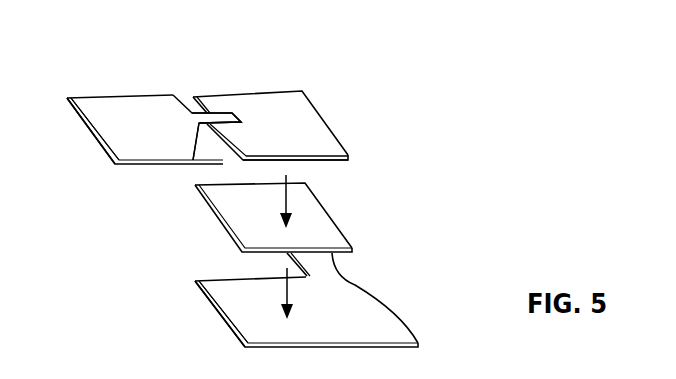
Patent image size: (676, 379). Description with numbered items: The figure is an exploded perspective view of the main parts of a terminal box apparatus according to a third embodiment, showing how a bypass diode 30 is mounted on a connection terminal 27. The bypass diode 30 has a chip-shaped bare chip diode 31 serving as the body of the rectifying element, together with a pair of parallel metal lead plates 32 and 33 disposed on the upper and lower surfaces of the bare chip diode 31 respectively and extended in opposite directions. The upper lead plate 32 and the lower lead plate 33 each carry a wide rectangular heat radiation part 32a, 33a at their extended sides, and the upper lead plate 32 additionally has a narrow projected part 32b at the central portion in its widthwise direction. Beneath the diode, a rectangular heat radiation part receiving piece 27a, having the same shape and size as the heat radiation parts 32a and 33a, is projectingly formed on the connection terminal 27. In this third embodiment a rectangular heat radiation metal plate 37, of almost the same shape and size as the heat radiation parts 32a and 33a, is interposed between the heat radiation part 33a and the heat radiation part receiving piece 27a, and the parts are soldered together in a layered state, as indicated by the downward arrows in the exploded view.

The connection terminal 27 is at (363, 307).
The heat radiation part receiving piece 27a is at (235, 312).
The bypass diode 30 is at (200, 83).
The bare chip diode 31 is at (236, 113).
The upper lead plate 32 is at (125, 107).
The heat radiation part 32a is at (93, 119).
The projected part 32b is at (213, 121).
The lower lead plate 33 is at (290, 103).
The heat radiation part 33a is at (292, 128).
The heat radiation metal plate 37 is at (302, 211).